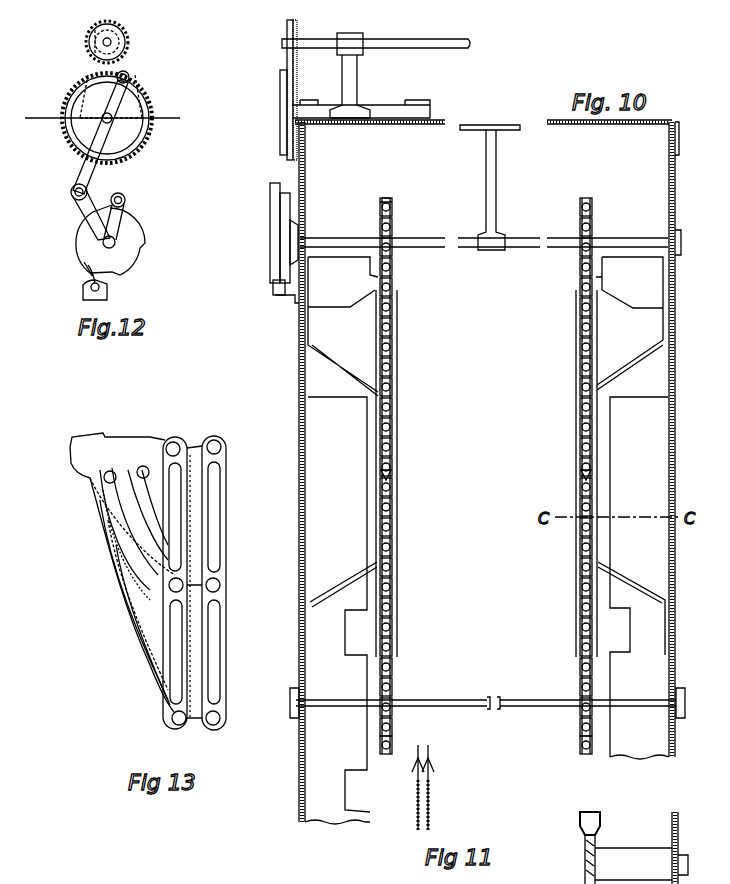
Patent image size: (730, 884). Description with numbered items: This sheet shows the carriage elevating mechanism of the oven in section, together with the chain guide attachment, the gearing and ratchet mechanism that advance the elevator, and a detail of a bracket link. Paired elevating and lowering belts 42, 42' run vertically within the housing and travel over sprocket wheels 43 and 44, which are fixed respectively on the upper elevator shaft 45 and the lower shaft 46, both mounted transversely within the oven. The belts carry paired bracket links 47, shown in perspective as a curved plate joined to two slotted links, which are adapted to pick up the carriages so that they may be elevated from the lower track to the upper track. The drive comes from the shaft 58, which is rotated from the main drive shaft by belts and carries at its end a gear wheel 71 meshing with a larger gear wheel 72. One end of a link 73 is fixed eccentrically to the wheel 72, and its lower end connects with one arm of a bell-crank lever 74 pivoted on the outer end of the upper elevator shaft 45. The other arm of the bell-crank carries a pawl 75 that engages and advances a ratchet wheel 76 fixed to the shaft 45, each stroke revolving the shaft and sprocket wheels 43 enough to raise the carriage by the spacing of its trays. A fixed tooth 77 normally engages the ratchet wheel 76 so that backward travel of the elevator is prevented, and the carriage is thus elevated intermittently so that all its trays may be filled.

In FIG. 12, the shaft 58 is at (120, 42).
In FIG. 10, the shaft 58 is at (408, 44).
In FIG. 12, the gear wheel 71 is at (90, 50).
In FIG. 10, the gear wheel 71 is at (287, 40).
In FIG. 12, the larger gear wheel 72 is at (70, 98).
In FIG. 10, the larger gear wheel 72 is at (297, 86).
In FIG. 12, the link 73 is at (78, 163).
In FIG. 10, the link 73 is at (280, 102).
In FIG. 12, the bell-crank lever 74 is at (95, 228).
In FIG. 10, the bell-crank lever 74 is at (272, 212).
In FIG. 12, the pawl 75 is at (126, 203).
In FIG. 12, the ratchet wheel 76 is at (136, 268).
In FIG. 10, the ratchet wheel 76 is at (280, 262).
In FIG. 12, the fixed tooth 77 is at (85, 285).
In FIG. 10, the fixed tooth 77 is at (276, 292).
In FIG. 12, the upper elevator shaft 45 is at (105, 250).
In FIG. 10, the upper elevator shaft 45 is at (362, 240).
In FIG. 10, the sprocket wheel 43 is at (392, 232).
In FIG. 10, the elevating belt 42 is at (409, 476).
In FIG. 10, the elevating belt 42' is at (610, 541).
In FIG. 13, the bracket link 47 is at (90, 510).
In FIG. 10, the bracket link 47 is at (398, 472).
In FIG. 10, the sprocket wheel 44 is at (400, 708).
In FIG. 10, the shaft 46 is at (470, 704).